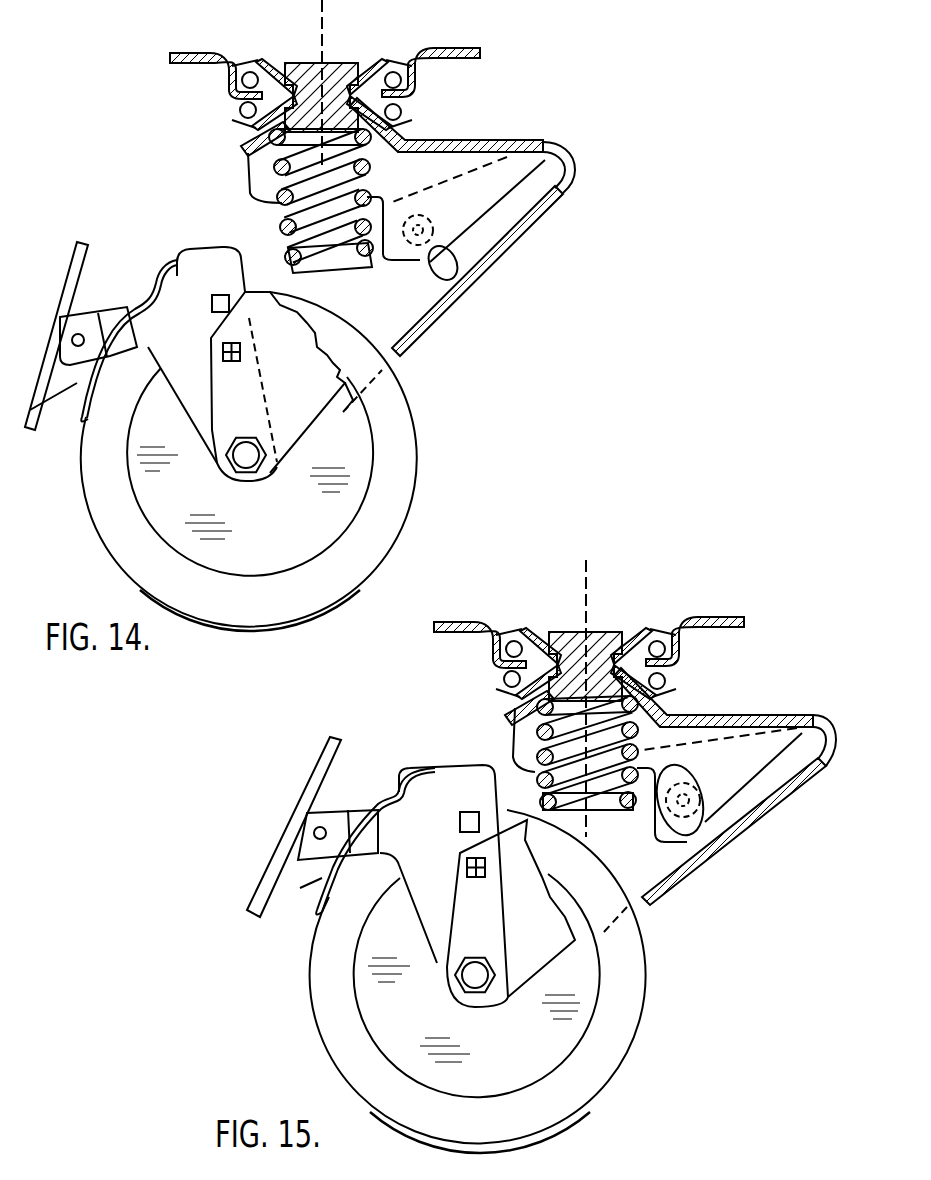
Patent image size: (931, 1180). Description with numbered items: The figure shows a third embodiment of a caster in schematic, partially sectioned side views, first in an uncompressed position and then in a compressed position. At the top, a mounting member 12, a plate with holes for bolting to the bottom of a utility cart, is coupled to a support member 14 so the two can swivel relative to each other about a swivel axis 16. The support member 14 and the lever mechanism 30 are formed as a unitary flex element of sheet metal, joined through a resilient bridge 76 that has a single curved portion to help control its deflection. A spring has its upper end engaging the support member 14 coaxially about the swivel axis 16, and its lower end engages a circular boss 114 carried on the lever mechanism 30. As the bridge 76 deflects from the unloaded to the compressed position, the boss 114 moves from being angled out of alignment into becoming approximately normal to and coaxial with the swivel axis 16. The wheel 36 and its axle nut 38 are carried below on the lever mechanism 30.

In FIG. 14, the mounting member 12 is at (466, 48).
In FIG. 15, the mounting member 12 is at (718, 620).
In FIG. 14, the support member 14 is at (485, 141).
In FIG. 15, the support member 14 is at (735, 715).
In FIG. 14, the swivel axis 16 is at (326, 13).
In FIG. 15, the swivel axis 16 is at (590, 576).
In FIG. 14, the lever mechanism 30 is at (437, 315).
In FIG. 15, the lever mechanism 30 is at (682, 872).
In FIG. 14, the wheel 36 is at (104, 512).
In FIG. 15, the wheel 36 is at (330, 1010).
In FIG. 14, the axle nut 38 is at (248, 458).
In FIG. 15, the axle nut 38 is at (480, 980).
In FIG. 14, the resilient bridge 76 is at (576, 152).
In FIG. 15, the resilient bridge 76 is at (830, 716).
In FIG. 14, the circular boss 114 is at (367, 270).
In FIG. 15, the circular boss 114 is at (622, 818).